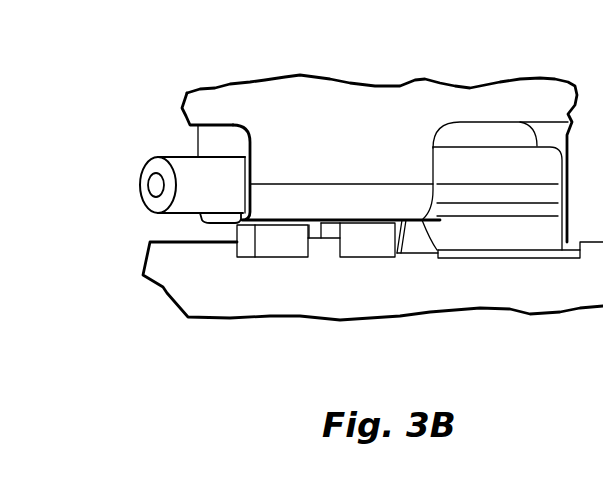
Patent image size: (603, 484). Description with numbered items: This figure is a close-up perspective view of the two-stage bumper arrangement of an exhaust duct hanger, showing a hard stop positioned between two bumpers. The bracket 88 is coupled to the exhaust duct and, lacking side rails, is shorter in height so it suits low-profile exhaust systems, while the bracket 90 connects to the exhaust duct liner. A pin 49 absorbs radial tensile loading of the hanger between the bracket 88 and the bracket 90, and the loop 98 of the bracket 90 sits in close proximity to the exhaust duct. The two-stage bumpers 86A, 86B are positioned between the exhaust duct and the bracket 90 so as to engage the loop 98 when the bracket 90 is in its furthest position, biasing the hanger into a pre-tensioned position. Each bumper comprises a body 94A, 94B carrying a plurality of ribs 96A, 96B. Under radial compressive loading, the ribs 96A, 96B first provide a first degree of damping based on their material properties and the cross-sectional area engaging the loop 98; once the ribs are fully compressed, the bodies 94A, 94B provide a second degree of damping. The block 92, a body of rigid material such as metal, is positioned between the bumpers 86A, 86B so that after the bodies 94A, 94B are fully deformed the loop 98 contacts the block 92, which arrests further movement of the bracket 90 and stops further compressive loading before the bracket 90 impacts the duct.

The pin 49 is at (182, 168).
The loop 98 is at (217, 219).
The bracket 90 is at (356, 155).
The bracket 88 is at (517, 175).
The two-stage bumper 86A is at (226, 261).
The two-stage bumper 86B is at (408, 263).
The block 92 is at (320, 240).
The body 94A is at (285, 238).
The body 94B is at (368, 238).
The ribs 96A is at (268, 245).
The ribs 96B is at (352, 245).